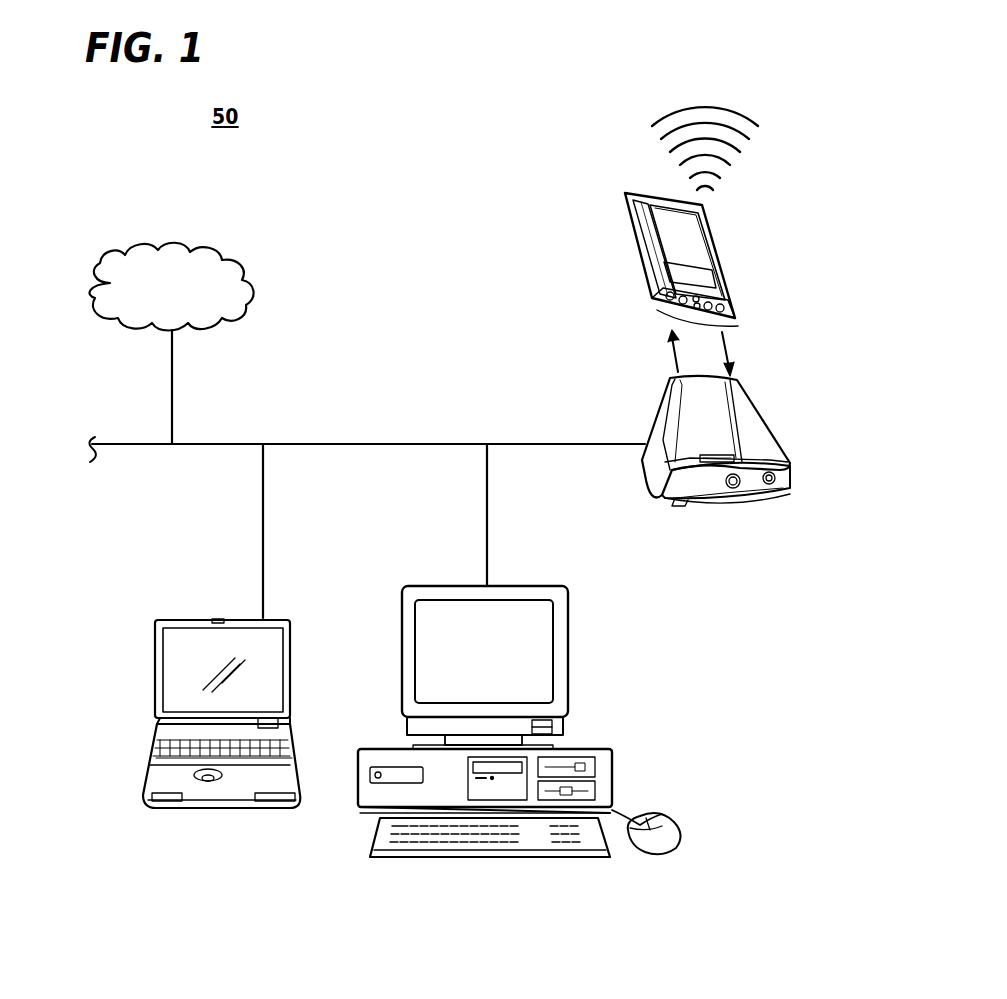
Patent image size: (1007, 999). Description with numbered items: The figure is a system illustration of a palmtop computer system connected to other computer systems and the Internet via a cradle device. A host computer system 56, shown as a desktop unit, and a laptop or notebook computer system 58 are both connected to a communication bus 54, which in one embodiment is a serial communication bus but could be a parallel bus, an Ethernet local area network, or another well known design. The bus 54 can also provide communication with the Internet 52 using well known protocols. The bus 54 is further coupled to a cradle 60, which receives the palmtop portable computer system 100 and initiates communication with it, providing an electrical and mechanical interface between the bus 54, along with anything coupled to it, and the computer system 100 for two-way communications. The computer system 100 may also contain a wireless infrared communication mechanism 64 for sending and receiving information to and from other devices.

The Internet 52 is at (88, 290).
The communication bus 54 is at (317, 443).
The host computer system 56 is at (568, 643).
The laptop or notebook computer system 58 is at (155, 657).
The cradle 60 is at (733, 504).
The wireless infrared communication mechanism 64 is at (672, 153).
The palmtop portable computer system 100 is at (634, 240).